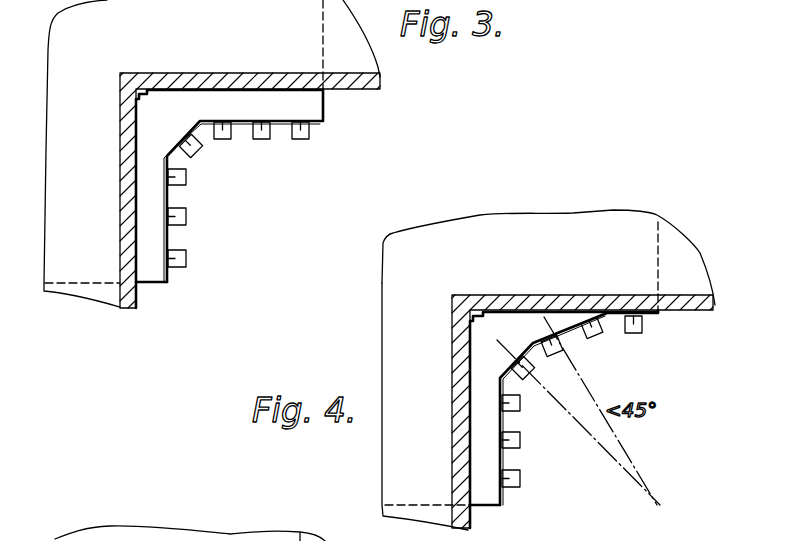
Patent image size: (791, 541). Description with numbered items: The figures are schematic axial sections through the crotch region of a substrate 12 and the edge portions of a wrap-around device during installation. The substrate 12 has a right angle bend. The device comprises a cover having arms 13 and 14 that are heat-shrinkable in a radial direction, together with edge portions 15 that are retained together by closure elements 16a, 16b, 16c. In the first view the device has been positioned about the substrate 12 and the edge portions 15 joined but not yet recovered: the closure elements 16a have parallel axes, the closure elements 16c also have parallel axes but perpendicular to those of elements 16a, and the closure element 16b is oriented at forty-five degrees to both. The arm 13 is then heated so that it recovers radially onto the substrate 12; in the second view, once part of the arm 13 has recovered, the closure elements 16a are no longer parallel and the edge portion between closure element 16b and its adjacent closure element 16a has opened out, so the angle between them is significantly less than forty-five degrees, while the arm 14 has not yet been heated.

In FIG. 3, the substrate 12 is at (365, 80).
In FIG. 4, the substrate 12 is at (462, 449).
In FIG. 3, the arm 13 is at (307, 106).
In FIG. 4, the arm 13 is at (564, 420).
In FIG. 3, the arm 14 is at (150, 253).
In FIG. 4, the arm 14 is at (487, 487).
In FIG. 3, the edge portions 15 is at (320, 123).
In FIG. 4, the edge portions 15 is at (579, 407).
In FIG. 3, the closure elements 16a is at (297, 136).
In FIG. 4, the closure elements 16a is at (595, 340).
In FIG. 3, the closure element 16b is at (198, 154).
In FIG. 4, the closure element 16b is at (528, 382).
In FIG. 3, the closure elements 16c is at (186, 178).
In FIG. 4, the closure elements 16c is at (520, 401).